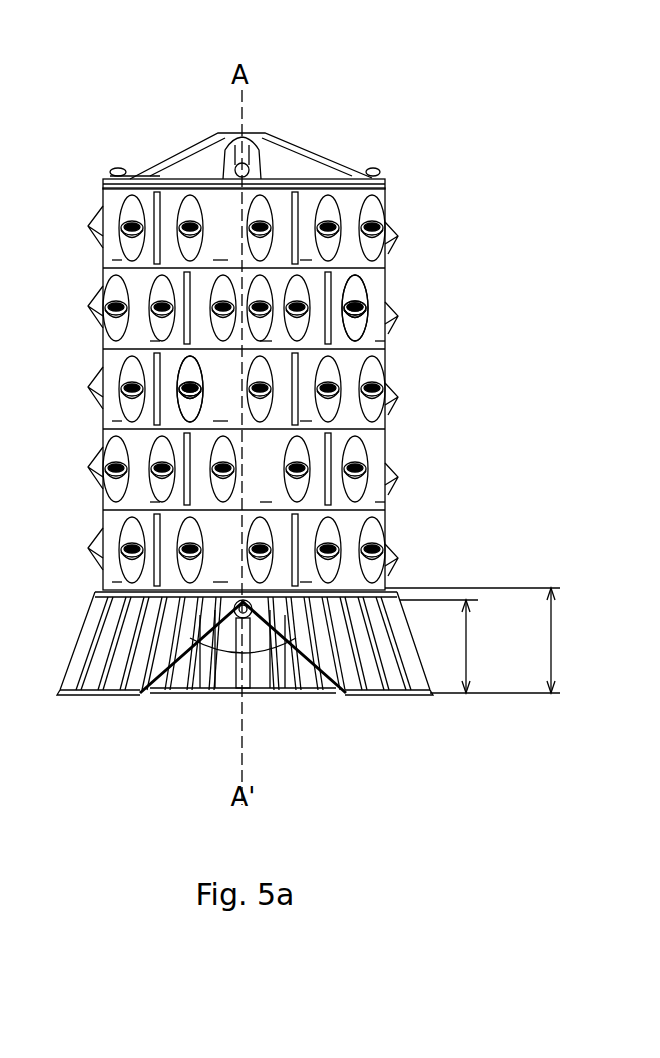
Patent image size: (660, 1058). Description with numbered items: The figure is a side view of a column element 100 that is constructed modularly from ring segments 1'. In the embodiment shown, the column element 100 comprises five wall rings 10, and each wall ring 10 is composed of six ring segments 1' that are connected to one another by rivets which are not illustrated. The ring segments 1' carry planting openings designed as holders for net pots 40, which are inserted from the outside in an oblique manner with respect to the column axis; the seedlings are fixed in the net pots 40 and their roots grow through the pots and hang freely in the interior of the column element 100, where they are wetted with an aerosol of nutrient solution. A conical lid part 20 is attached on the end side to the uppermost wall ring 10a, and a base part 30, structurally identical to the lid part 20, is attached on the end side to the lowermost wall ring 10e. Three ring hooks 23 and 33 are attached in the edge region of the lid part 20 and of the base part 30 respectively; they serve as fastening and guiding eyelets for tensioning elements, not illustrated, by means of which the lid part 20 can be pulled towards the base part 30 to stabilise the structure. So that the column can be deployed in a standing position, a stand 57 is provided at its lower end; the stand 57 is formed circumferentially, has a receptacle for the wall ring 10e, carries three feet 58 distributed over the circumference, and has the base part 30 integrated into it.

The column element 100 is at (452, 437).
The lid part 20 is at (289, 158).
The ring hooks 23 is at (117, 168).
The uppermost wall ring 10a is at (350, 242).
The wall ring 10 is at (352, 373).
The lowermost wall ring 10e is at (352, 540).
The ring segment 1' is at (367, 239).
The net pot 40 is at (178, 388).
The feet 58 is at (112, 672).
The base part 30 is at (225, 630).
The ring hooks 33 is at (250, 628).
The stand 57 is at (400, 652).